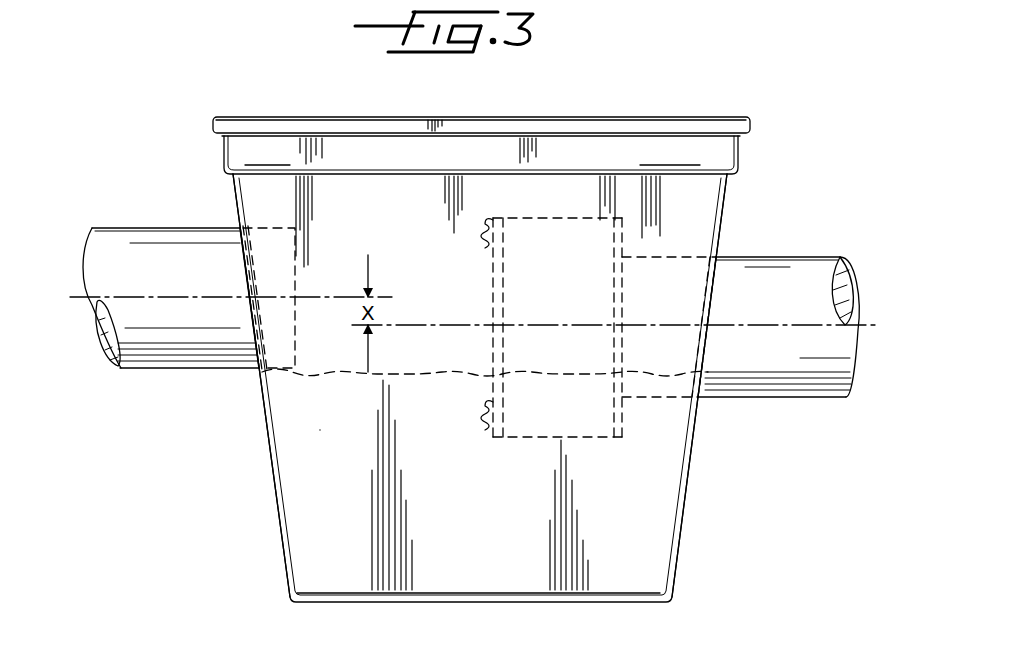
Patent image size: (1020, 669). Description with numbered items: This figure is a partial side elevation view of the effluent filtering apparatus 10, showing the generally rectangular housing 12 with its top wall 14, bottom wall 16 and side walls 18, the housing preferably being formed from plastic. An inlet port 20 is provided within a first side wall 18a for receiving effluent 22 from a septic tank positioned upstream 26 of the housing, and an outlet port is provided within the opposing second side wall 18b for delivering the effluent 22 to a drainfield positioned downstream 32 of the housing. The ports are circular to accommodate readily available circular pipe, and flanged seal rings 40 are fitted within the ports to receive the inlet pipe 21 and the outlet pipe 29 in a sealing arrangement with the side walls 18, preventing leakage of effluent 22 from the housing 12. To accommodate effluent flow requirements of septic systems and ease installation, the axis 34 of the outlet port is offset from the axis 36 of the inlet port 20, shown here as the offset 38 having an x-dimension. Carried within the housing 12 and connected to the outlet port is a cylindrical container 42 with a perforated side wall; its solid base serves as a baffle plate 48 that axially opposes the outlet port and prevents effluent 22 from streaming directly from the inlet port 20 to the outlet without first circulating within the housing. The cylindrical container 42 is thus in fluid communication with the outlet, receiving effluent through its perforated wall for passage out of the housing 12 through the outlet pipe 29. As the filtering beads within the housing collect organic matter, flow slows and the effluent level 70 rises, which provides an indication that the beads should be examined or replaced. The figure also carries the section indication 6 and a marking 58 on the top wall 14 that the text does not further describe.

The effluent filtering apparatus 10 is at (744, 101).
The housing 12 is at (686, 509).
The top wall 14 is at (263, 118).
The bottom wall 16 is at (630, 604).
The side walls 18 is at (318, 548).
The first side wall 18a is at (261, 404).
The second side wall 18b is at (697, 424).
The inlet port 20 is at (237, 250).
The inlet pipe 21 is at (178, 343).
The effluent 22 is at (298, 446).
The upstream 26 is at (72, 228).
The outlet pipe 29 is at (795, 274).
The downstream 32 is at (870, 382).
The axis of the outlet port 34 is at (857, 327).
The axis of the inlet port 36 is at (96, 300).
The offset 38 is at (388, 311).
The flanged seal rings 40 is at (234, 248).
The cylindrical container 42 is at (586, 250).
The baffle plate 48 is at (490, 279).
The lid top surface 58 is at (541, 122).
The effluent level 70 is at (313, 375).
The section line 6- 6 is at (482, 350).